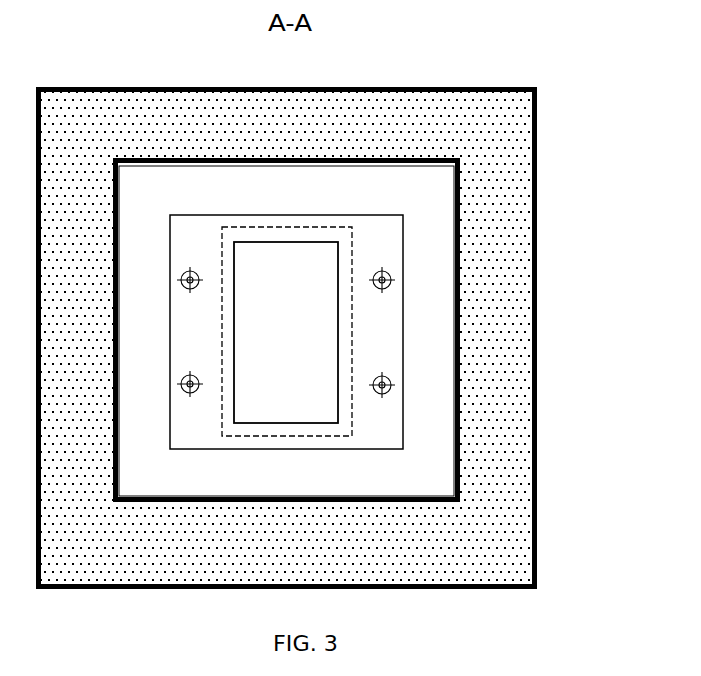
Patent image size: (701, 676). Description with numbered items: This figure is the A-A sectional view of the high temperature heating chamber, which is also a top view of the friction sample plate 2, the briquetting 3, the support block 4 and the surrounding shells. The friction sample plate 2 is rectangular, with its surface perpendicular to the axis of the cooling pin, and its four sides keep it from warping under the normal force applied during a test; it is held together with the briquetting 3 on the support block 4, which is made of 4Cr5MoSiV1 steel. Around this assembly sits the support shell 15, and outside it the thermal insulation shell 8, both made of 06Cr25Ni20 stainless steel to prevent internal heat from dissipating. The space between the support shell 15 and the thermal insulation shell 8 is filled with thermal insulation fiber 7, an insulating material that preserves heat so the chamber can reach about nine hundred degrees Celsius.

The friction sample plate 2 is at (262, 234).
The briquetting 3 is at (332, 246).
The support block 4 is at (371, 331).
The thermal insulation fiber 7 is at (329, 338).
The thermal insulation shell 8 is at (320, 324).
The support shell 15 is at (374, 332).